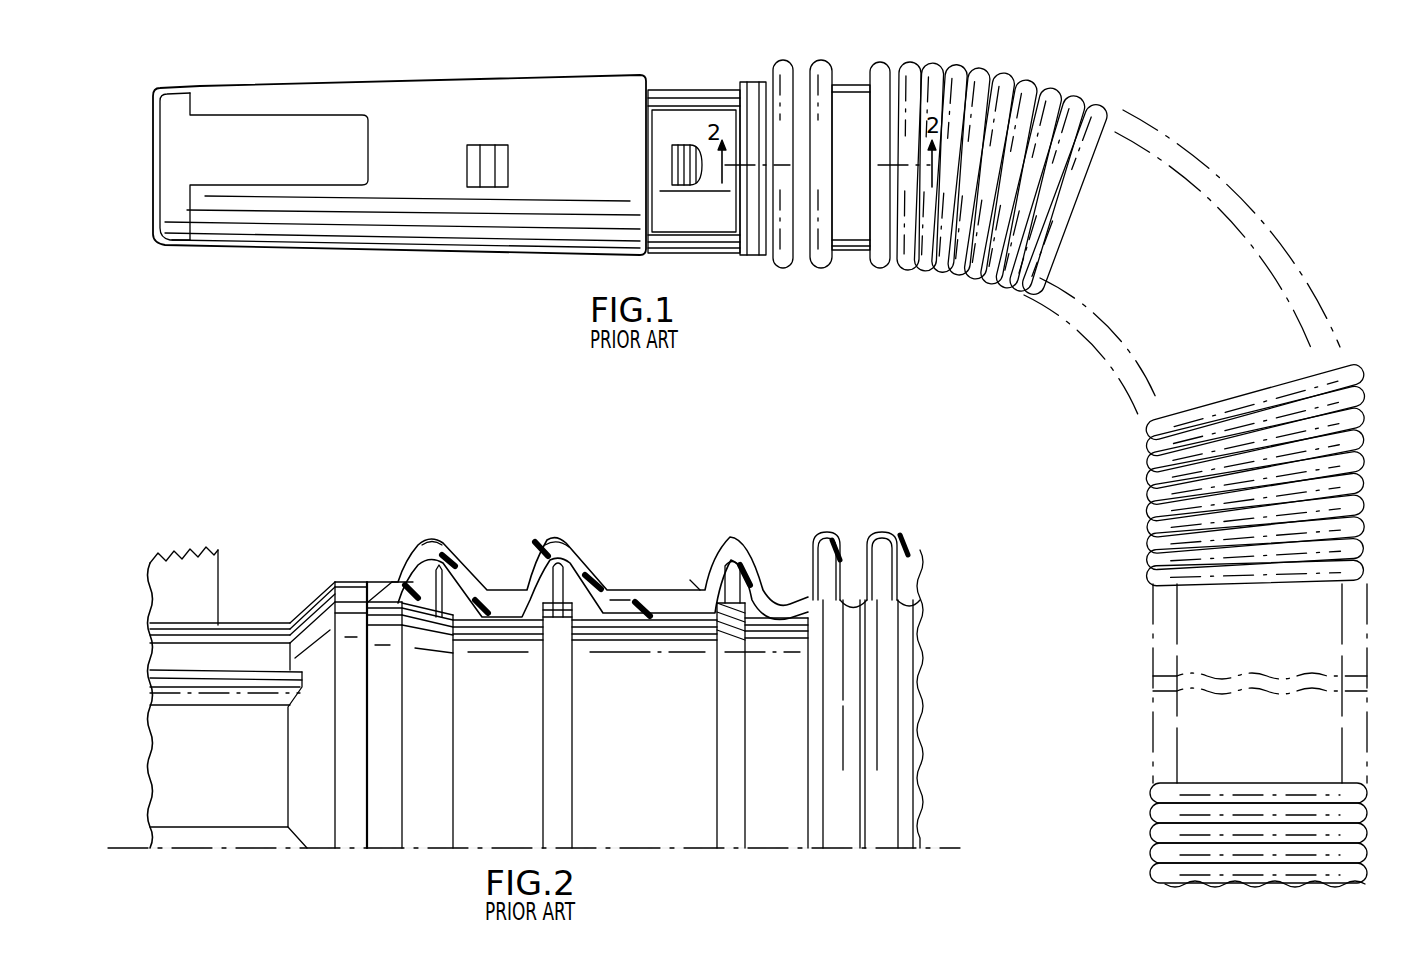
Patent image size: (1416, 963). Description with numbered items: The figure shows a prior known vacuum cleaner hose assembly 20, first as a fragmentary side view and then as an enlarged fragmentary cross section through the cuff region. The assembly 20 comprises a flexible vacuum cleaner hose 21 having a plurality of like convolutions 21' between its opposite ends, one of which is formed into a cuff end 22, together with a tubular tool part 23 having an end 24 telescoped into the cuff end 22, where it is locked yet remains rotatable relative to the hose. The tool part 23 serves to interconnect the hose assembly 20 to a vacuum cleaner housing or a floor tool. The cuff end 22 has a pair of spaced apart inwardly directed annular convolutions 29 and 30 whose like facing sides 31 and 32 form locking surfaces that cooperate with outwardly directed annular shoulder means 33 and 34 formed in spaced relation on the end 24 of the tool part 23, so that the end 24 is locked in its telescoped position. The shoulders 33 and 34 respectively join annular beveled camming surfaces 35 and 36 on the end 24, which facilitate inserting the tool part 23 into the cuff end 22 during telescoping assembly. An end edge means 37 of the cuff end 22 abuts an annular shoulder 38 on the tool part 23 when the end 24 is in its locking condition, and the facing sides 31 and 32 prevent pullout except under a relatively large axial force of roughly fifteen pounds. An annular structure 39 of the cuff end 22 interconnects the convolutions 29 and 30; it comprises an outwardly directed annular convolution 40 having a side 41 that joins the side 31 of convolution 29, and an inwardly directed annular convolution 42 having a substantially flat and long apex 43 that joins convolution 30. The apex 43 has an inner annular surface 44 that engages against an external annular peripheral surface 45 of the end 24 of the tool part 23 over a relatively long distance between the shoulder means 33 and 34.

In FIG. 1, the vacuum cleaner hose assembly 20 is at (1274, 150).
In FIG. 2, the vacuum cleaner hose assembly 20 is at (588, 509).
In FIG. 1, the flexible vacuum cleaner hose 21 is at (1005, 172).
In FIG. 2, the flexible vacuum cleaner hose 21 is at (876, 678).
In FIG. 1, the convolutions 21' is at (1279, 620).
In FIG. 1, the cuff end 22 is at (850, 85).
In FIG. 2, the cuff end 22 is at (657, 590).
In FIG. 1, the tubular tool part 23 is at (416, 75).
In FIG. 2, the tubular tool part 23 is at (150, 750).
In FIG. 2, the end 24 is at (780, 828).
In FIG. 2, the annular convolution 29 is at (530, 615).
In FIG. 2, the annular convolution 30 is at (705, 600).
In FIG. 2, the facing side 31 is at (555, 580).
In FIG. 2, the facing side 32 is at (740, 562).
In FIG. 2, the annular shoulder means 33 is at (543, 795).
In FIG. 2, the annular shoulder means 34 is at (717, 803).
In FIG. 2, the annular beveled camming surface 35 is at (558, 760).
In FIG. 2, the annular beveled camming surface 36 is at (735, 742).
In FIG. 1, the end edge means 37 is at (749, 82).
In FIG. 2, the end edge means 37 is at (358, 582).
In FIG. 1, the annular shoulder 38 is at (765, 100).
In FIG. 2, the annular shoulder 38 is at (368, 850).
In FIG. 2, the annular structure 39 is at (612, 585).
In FIG. 1, the outwardly directed annular convolution 40 is at (818, 270).
In FIG. 2, the outwardly directed annular convolution 40 is at (560, 538).
In FIG. 2, the side 41 is at (533, 563).
In FIG. 2, the inwardly directed annular convolution 42 is at (688, 580).
In FIG. 2, the apex 43 is at (665, 600).
In FIG. 2, the inner annular surface 44 is at (640, 600).
In FIG. 2, the external annular peripheral surface 45 is at (630, 600).